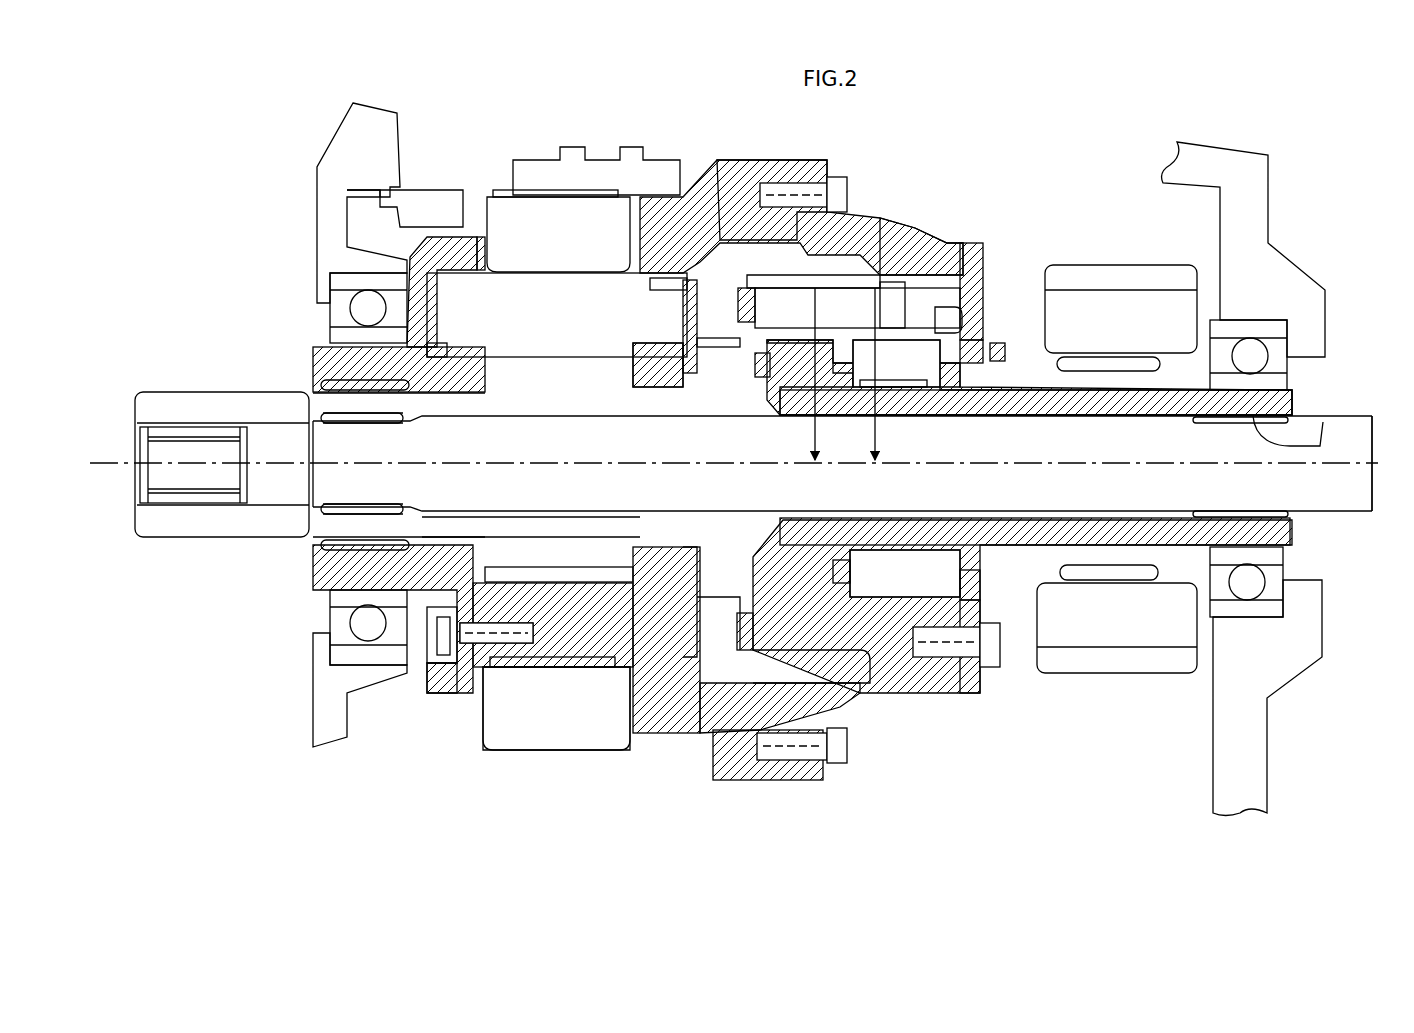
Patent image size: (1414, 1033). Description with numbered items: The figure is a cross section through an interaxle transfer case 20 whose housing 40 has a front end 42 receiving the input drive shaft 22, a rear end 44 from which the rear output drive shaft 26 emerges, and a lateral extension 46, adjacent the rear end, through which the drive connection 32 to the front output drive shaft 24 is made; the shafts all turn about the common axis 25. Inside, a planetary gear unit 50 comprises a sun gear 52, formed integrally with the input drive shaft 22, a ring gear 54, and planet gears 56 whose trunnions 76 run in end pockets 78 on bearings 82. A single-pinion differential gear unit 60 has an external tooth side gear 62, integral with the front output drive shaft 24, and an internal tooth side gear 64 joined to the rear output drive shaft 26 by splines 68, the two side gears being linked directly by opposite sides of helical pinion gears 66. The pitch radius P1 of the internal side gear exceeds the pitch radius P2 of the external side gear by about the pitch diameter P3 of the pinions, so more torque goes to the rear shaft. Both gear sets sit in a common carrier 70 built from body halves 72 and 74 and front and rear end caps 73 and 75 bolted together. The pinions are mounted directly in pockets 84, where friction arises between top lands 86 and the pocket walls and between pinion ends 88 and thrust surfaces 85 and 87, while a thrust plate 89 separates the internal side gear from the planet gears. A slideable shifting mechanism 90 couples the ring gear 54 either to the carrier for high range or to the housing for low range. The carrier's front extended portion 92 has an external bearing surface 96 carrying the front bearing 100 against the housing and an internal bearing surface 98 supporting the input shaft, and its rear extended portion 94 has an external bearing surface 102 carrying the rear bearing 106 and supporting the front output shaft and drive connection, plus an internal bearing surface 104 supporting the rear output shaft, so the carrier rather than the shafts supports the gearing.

The transfer case 20 is at (441, 99).
The input drive shaft 22 is at (200, 408).
The front output drive shaft 24 is at (1030, 568).
The common axis 25 is at (1376, 470).
The rear output drive shaft 26 is at (1026, 494).
The drive connection 32 is at (1123, 277).
The housing 40 is at (328, 133).
The front end 42 is at (316, 245).
The rear end 44 is at (1280, 690).
The lateral extension 46 is at (1188, 142).
The planetary gear unit 50 is at (524, 728).
The sun gear 52 is at (557, 551).
The ring gear 54 is at (565, 238).
The planet gears 56 is at (560, 317).
The single-pinion differential gear unit 60 is at (842, 243).
The external tooth side gear 62 is at (917, 581).
The internal tooth side gear 64 is at (832, 668).
The pinion gears 66 is at (851, 319).
The splines 68 is at (718, 348).
The common carrier 70 is at (717, 766).
The body half 72 is at (736, 158).
The front end cap 73 is at (440, 700).
The body half 74 is at (966, 242).
The rear end cap 75 is at (985, 685).
The trunnions 76 is at (443, 258).
The end pockets 78 is at (465, 348).
The bearings 82 is at (662, 345).
The pockets 84 is at (892, 290).
The thrust surface 85 is at (965, 285).
The top lands 86 is at (903, 268).
The thrust surface 87 is at (757, 305).
The pinion ends 88 is at (982, 312).
The thrust plate 89 is at (700, 573).
The slideable shifting mechanism 90 is at (597, 150).
The front extended portion 92 is at (313, 563).
The rear extended portion 94 is at (1288, 540).
The external bearing surface 96 is at (328, 345).
The internal bearing surface 98 is at (345, 393).
The front bearing 100 is at (358, 620).
The external bearing surface 102 is at (1290, 382).
The internal bearing surface 104 is at (1295, 445).
The rear bearing 106 is at (1258, 584).
The pitch radius P1 is at (812, 436).
The pitch radius P2 is at (880, 436).
The pitch diameter P3 is at (928, 345).